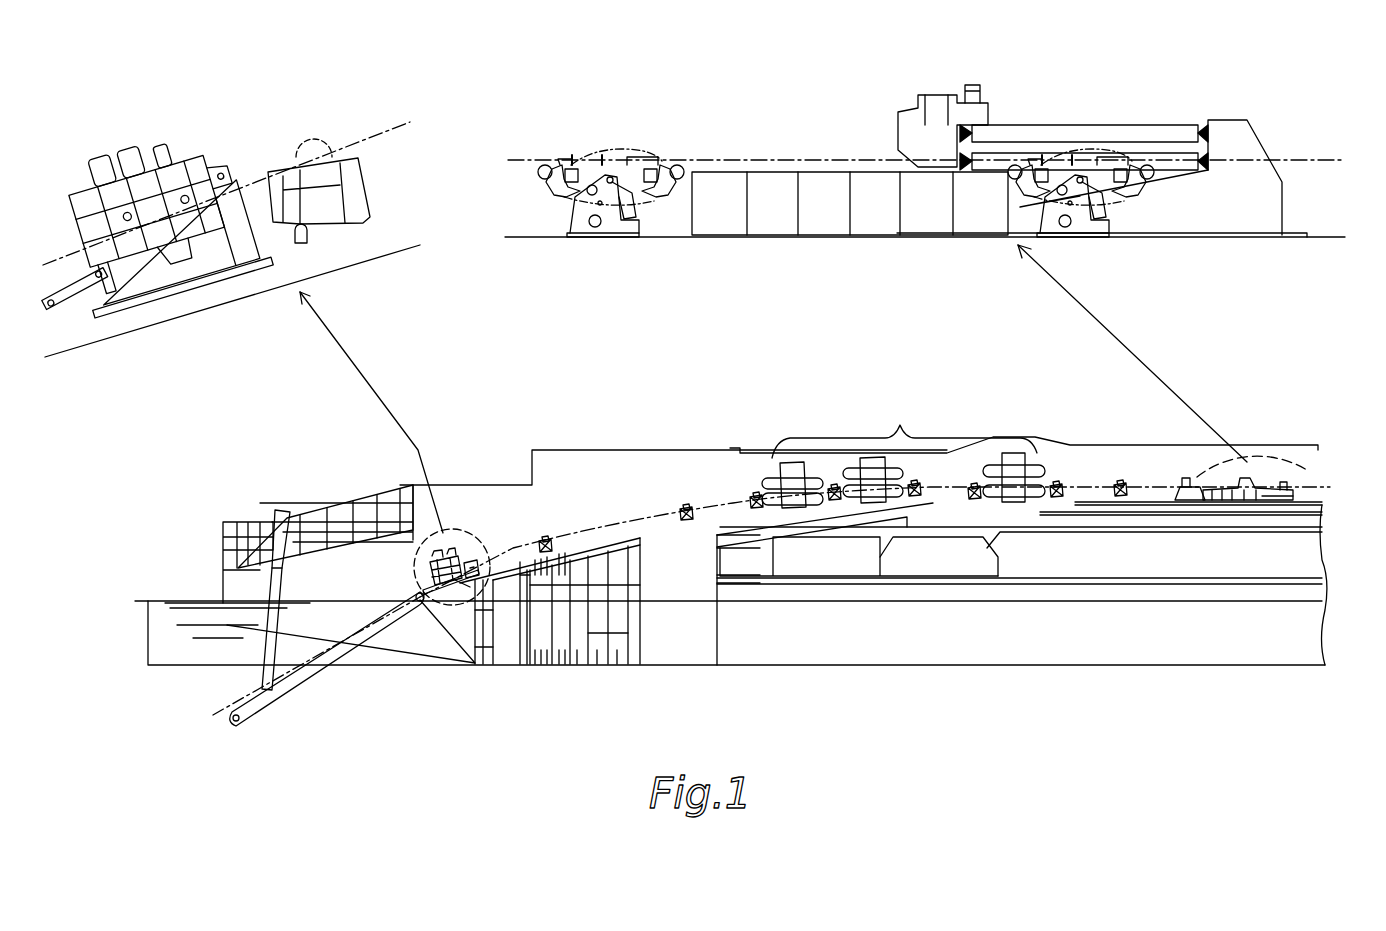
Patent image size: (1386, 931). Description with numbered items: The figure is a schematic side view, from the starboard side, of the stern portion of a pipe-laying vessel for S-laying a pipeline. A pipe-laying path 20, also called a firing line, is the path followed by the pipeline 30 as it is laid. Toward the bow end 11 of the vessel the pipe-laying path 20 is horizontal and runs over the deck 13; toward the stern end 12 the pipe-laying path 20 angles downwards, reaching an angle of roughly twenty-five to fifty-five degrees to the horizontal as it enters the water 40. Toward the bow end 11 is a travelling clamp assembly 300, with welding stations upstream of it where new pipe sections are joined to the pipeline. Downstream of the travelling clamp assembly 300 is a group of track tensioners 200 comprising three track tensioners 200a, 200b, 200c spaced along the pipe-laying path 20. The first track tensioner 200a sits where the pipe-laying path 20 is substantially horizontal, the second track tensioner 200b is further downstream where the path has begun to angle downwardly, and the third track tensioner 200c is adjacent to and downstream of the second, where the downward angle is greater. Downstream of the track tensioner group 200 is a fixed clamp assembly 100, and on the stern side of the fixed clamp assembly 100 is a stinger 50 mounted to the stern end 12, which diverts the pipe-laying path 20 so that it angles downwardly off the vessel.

The bow end 11 is at (1305, 557).
The stern end 12 is at (345, 481).
The deck 13 is at (1083, 505).
The pipe-laying path 20 is at (613, 522).
The pipeline 30 is at (684, 508).
The water 40 is at (183, 602).
The stinger 50 is at (317, 673).
The fixed clamp assembly 100 is at (500, 548).
The group of track tensioners 200 is at (914, 484).
The first track tensioner 200a is at (1012, 493).
The second track tensioner 200b is at (867, 498).
The third track tensioner 200c is at (792, 500).
The travelling clamp assembly 300 is at (1270, 434).